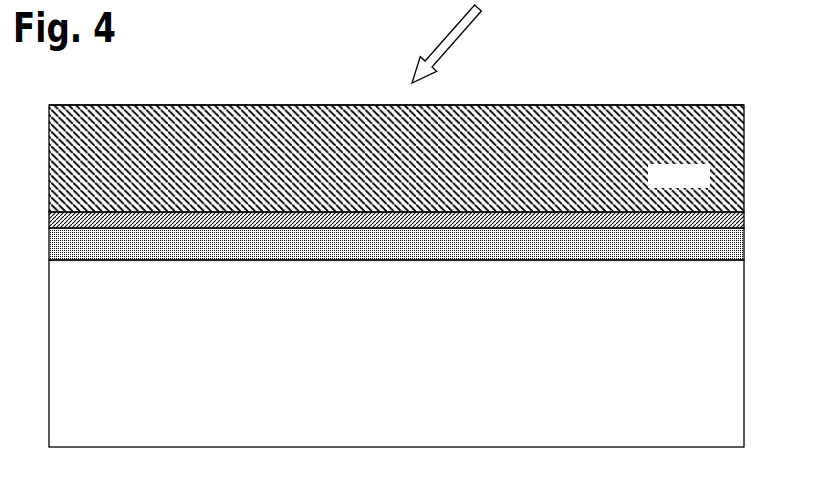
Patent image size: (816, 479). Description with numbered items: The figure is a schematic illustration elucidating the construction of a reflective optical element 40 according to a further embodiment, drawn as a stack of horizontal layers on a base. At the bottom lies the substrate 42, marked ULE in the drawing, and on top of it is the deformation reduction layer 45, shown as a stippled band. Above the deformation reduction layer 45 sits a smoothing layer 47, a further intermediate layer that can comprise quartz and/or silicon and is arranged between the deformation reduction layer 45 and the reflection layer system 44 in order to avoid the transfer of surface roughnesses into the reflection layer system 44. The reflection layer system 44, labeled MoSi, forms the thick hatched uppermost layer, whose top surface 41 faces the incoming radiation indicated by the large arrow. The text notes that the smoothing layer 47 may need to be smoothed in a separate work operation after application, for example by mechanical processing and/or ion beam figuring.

The incident EUV light / reflective mask blank 40 is at (522, 70).
The top surface of absorber layer 41 is at (630, 105).
The ULE substrate 42 is at (113, 398).
The reflection layer system 44 is at (112, 166).
The deformation reduction layer 45 is at (728, 252).
The smoothing layer 47 is at (48, 229).